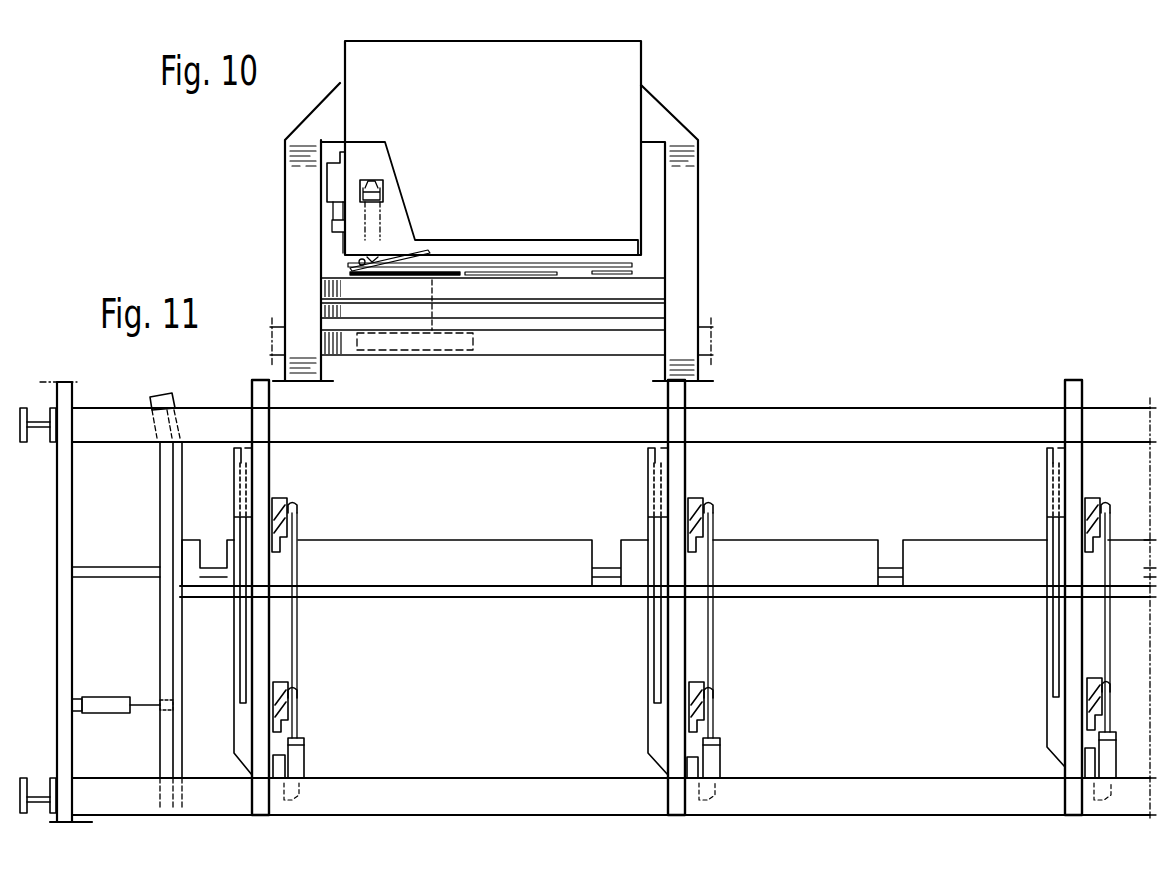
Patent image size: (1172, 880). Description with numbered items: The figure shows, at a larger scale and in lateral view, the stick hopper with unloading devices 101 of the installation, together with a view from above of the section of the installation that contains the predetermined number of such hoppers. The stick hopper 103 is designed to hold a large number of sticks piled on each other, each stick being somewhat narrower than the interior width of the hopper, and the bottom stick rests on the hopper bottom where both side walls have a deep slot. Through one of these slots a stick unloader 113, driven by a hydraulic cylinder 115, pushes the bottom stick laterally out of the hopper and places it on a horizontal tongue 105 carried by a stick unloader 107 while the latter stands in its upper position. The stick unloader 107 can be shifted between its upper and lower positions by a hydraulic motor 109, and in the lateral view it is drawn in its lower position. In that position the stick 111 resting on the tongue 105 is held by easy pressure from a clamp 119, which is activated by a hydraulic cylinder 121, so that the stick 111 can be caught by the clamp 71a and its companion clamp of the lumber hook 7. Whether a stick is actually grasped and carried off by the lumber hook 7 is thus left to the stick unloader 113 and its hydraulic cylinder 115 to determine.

In FIG. 10, the lumber hook 7 is at (393, 278).
In FIG. 11, the lumber hook 7 is at (458, 570).
In FIG. 10, the clamp 71a is at (443, 280).
In FIG. 10, the stick hopper with unloading devices 101 is at (707, 128).
In FIG. 11, the stick hopper with unloading devices 101 is at (732, 534).
In FIG. 10, the stick hopper 103 is at (628, 68).
In FIG. 11, the stick hopper 103 is at (263, 645).
In FIG. 10, the horizontal tongue 105 is at (513, 275).
In FIG. 10, the stick unloader 107 is at (338, 262).
In FIG. 10, the hydraulic motor 109 is at (327, 173).
In FIG. 10, the stick 111 is at (597, 272).
In FIG. 11, the stick unloader 113 is at (703, 503).
In FIG. 11, the hydraulic cylinder 115 is at (713, 762).
In FIG. 10, the clamp 119 is at (350, 270).
In FIG. 10, the hydraulic cylinder 121 is at (363, 215).